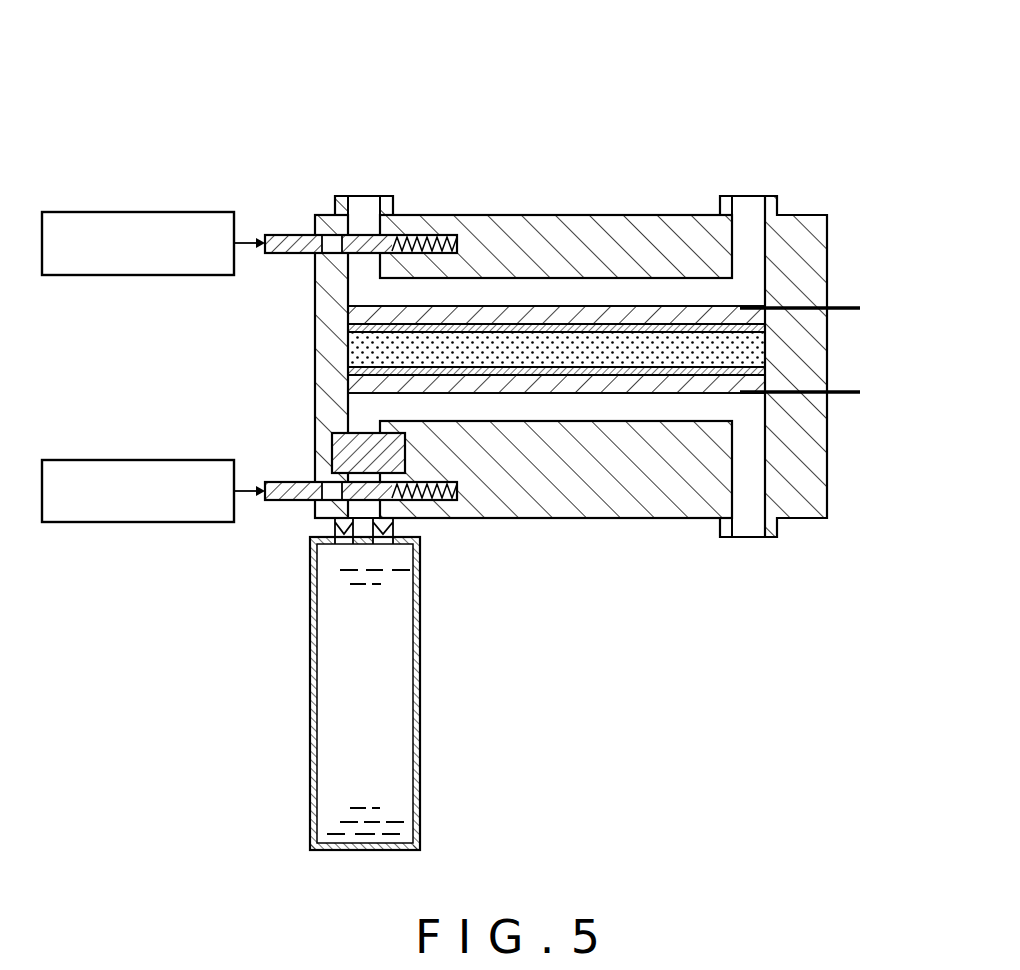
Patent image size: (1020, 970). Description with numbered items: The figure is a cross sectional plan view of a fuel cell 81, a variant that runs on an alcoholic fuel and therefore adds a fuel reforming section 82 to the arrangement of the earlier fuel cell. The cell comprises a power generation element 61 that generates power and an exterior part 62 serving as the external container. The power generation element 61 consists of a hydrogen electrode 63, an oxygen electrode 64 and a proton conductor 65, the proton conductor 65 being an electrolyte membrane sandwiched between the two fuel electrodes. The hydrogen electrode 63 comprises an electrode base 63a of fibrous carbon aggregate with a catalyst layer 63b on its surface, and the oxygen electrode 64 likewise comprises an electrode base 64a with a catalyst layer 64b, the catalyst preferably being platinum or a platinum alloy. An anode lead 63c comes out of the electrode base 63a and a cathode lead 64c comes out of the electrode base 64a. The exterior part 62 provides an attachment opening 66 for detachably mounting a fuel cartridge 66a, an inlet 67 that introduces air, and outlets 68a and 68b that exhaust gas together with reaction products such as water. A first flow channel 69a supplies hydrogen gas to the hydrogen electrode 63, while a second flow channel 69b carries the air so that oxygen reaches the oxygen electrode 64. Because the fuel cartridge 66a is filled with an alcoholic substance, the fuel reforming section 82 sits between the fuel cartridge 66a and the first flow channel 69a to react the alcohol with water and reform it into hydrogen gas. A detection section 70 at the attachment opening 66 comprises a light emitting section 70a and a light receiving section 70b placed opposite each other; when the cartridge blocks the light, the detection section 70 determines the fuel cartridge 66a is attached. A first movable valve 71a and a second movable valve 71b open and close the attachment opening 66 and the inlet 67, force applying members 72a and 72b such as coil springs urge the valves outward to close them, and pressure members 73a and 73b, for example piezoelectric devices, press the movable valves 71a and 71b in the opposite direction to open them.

The fuel cell 81 is at (642, 96).
The power generation element 61 is at (650, 297).
The exterior part 62 is at (505, 500).
The hydrogen electrode 63 is at (556, 497).
The electrode base 63a is at (575, 393).
The catalyst layer 63b is at (655, 375).
The anode lead 63c is at (847, 427).
The oxygen electrode 64 is at (556, 218).
The electrode base 64a is at (510, 306).
The catalyst layer 64b is at (590, 324).
The cathode lead 64c is at (846, 306).
The proton conductor 65 is at (740, 345).
The attachment opening 66 is at (378, 685).
The fuel cartridge 66a is at (420, 688).
The inlet 67 is at (350, 196).
The outlet 68a is at (763, 533).
The outlet 68b is at (762, 206).
The first flow channel 69a is at (703, 405).
The second flow channel 69b is at (698, 293).
The detection section 70 is at (262, 596).
The light emitting section 70a is at (336, 540).
The light receiving section 70b is at (382, 537).
The first movable valve 71a is at (287, 482).
The second movable valve 71b is at (287, 235).
The force applying member 72a is at (440, 500).
The force applying member 72b is at (418, 235).
The pressure member 73a is at (137, 460).
The pressure member 73b is at (137, 212).
The fuel reforming section 82 is at (332, 440).